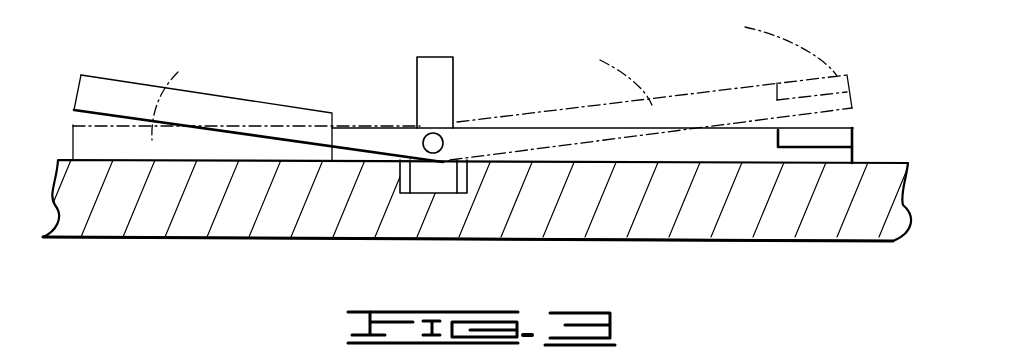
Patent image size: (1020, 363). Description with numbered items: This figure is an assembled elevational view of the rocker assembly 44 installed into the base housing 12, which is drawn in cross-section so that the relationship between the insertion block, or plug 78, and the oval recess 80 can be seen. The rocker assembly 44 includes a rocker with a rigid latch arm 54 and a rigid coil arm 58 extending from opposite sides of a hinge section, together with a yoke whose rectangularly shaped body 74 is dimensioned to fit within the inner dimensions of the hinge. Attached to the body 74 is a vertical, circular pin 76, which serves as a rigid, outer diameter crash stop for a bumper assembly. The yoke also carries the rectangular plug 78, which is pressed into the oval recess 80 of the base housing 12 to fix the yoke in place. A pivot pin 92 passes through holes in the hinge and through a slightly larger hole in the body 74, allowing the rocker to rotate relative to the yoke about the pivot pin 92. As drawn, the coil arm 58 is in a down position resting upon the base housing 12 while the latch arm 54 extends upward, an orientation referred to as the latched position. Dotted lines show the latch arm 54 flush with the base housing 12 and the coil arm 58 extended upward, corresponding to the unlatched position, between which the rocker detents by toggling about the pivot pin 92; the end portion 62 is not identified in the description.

The base housing 12 is at (114, 228).
The rocker assembly 44 is at (258, 135).
The latch arm 54 is at (258, 158).
The coil arm 58 is at (633, 138).
The end portion 62 is at (823, 140).
The body 74 is at (363, 159).
The pin 76 is at (448, 95).
The insertion block 78 is at (424, 187).
The oval recess 80 is at (470, 182).
The pivot pin 92 is at (425, 135).